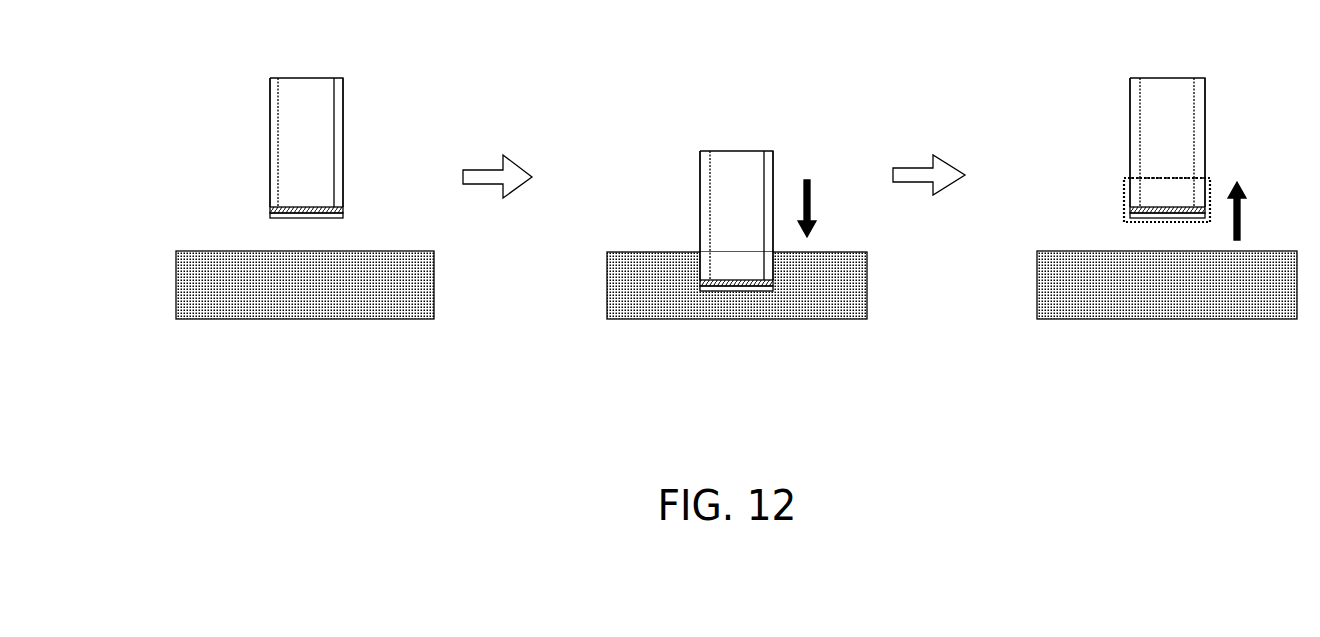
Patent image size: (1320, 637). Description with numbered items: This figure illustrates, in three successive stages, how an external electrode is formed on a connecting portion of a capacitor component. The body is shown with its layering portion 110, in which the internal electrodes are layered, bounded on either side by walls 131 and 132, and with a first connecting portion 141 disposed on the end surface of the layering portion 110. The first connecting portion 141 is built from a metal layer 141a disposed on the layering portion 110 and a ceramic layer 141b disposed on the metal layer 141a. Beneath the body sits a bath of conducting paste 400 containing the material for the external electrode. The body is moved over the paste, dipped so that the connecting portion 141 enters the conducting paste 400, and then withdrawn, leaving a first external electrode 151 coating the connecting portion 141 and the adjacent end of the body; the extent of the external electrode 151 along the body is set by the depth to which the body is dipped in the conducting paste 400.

The layering portion 110 is at (307, 88).
The first side wall 131 is at (338, 97).
The second side wall 132 is at (272, 98).
The first connecting portion 141 is at (158, 188).
The metal layer 141a is at (272, 210).
The ceramic layer 141b is at (272, 217).
The first external electrode 151 is at (1123, 190).
The conducting paste 400 is at (190, 282).